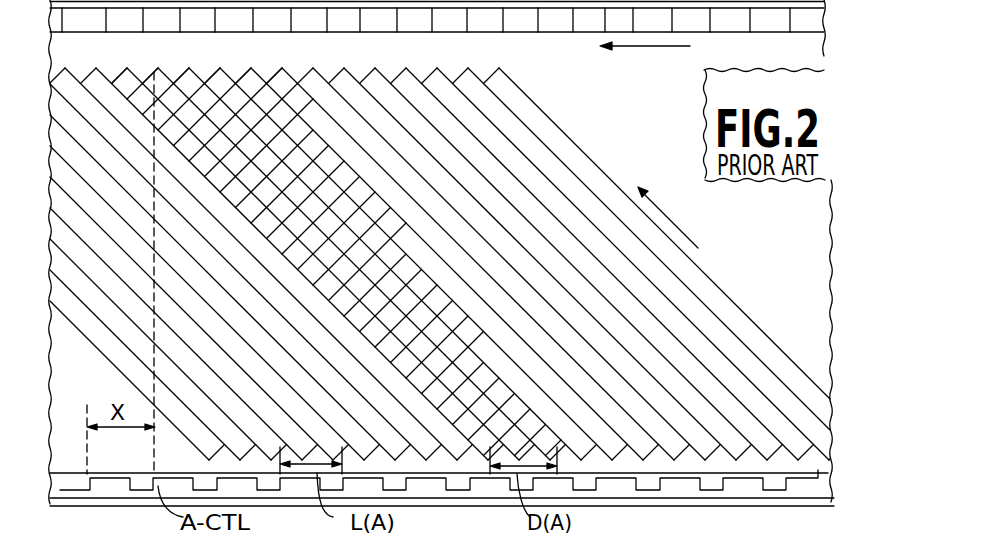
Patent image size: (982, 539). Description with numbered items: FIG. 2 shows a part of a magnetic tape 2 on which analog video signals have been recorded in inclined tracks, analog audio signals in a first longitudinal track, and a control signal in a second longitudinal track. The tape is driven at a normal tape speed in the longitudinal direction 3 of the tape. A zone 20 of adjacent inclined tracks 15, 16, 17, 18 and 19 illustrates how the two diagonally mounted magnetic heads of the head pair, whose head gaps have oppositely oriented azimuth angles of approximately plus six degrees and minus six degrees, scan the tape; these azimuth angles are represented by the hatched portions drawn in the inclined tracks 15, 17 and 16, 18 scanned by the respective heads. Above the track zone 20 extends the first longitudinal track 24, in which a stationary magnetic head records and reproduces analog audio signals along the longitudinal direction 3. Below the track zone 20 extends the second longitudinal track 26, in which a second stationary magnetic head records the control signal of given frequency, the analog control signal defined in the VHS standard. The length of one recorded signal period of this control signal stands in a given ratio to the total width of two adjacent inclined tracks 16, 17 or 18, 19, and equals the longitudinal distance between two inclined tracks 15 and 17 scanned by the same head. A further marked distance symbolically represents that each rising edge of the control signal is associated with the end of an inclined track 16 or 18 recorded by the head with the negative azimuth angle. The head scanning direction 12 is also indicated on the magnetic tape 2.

The magnetic tape 2 is at (748, 75).
The longitudinal direction 3 is at (636, 47).
The head scanning direction 12 is at (672, 222).
The inclined track 15 is at (233, 193).
The inclined track 16 is at (238, 165).
The inclined track 17 is at (300, 197).
The inclined track 18 is at (363, 225).
The inclined track 19 is at (433, 265).
The zone of inclined tracks 20 is at (738, 302).
The first longitudinal track 24 is at (77, 30).
The second longitudinal track 26 is at (62, 488).